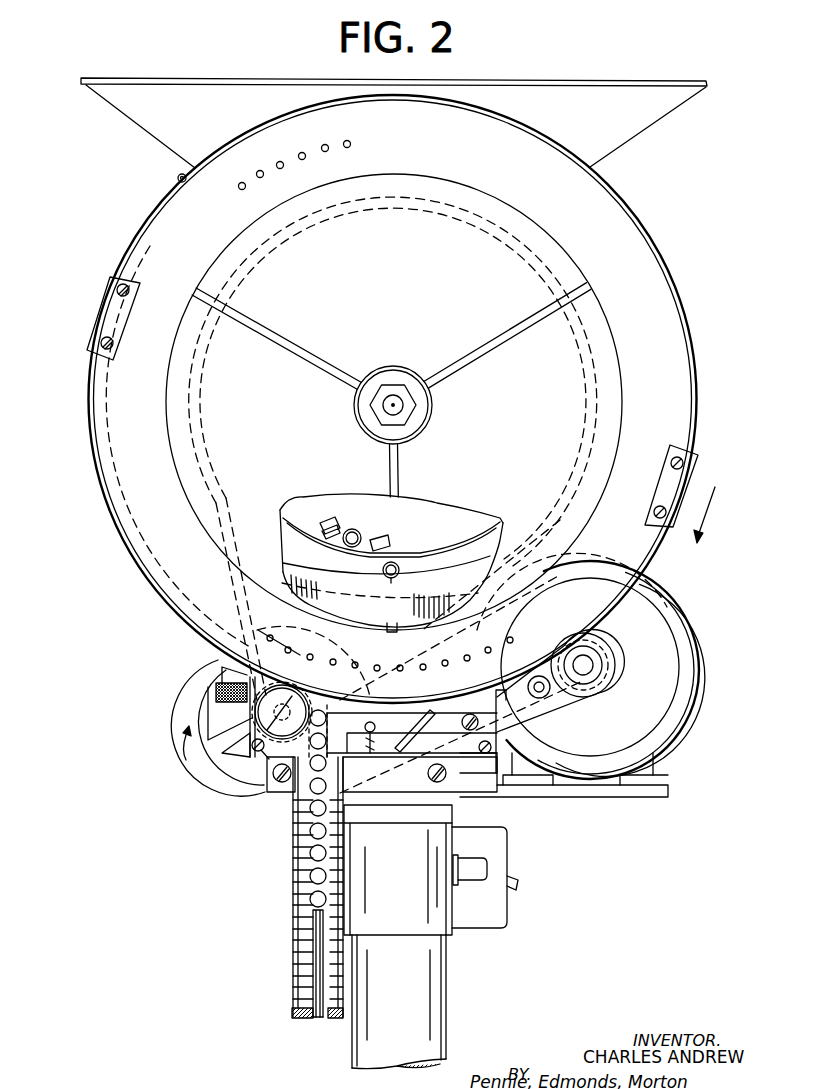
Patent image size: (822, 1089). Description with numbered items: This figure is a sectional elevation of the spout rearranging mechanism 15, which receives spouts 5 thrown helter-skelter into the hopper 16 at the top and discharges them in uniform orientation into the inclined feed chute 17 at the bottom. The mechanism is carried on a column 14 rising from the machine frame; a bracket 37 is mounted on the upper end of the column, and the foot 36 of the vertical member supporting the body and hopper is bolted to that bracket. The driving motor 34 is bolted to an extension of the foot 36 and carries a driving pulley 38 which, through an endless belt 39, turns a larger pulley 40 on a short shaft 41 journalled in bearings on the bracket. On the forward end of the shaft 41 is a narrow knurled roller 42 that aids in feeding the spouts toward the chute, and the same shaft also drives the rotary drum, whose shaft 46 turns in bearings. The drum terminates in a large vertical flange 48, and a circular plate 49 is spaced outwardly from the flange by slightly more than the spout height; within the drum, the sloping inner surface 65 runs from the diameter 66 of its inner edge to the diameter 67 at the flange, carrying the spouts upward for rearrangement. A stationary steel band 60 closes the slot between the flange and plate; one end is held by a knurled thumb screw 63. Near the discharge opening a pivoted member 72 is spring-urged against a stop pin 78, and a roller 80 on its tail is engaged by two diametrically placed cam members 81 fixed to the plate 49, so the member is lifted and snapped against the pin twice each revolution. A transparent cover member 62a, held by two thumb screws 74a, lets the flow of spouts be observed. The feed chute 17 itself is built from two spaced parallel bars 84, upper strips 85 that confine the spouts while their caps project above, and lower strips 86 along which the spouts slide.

The spouts 5 is at (347, 530).
The column 14 is at (420, 977).
The spout rearranging mechanism 15 is at (619, 175).
The hopper 16 is at (240, 78).
The feed chute 17 is at (300, 834).
The driving motor 34 is at (693, 655).
The foot 36 is at (590, 790).
The bracket 37 is at (418, 893).
The driving pulley 38 is at (566, 705).
The endless belt 39 is at (538, 716).
The larger pulley 40 is at (216, 681).
The short shaft 41 is at (351, 495).
The roller 42 is at (297, 705).
The shaft 46 is at (388, 410).
The vertical flange 48 is at (402, 615).
The circular disc or plate 49 is at (677, 404).
The stationary steel band 60 is at (97, 486).
The cover member 62a is at (468, 763).
The knurled thumb screw 63 is at (218, 728).
The inner surface 65 is at (415, 560).
The diameter of inner edge 66 is at (455, 547).
The diameter at flange intersection 67 is at (330, 586).
The pivoted member 72 is at (410, 757).
The thumb screws 74a is at (257, 756).
The stop pin 78 is at (437, 737).
The roller 80 is at (535, 676).
The cam members 81 is at (107, 305).
The spaced parallel bars 84 is at (320, 1018).
The strips 85 is at (330, 984).
The strips 86 is at (300, 1018).